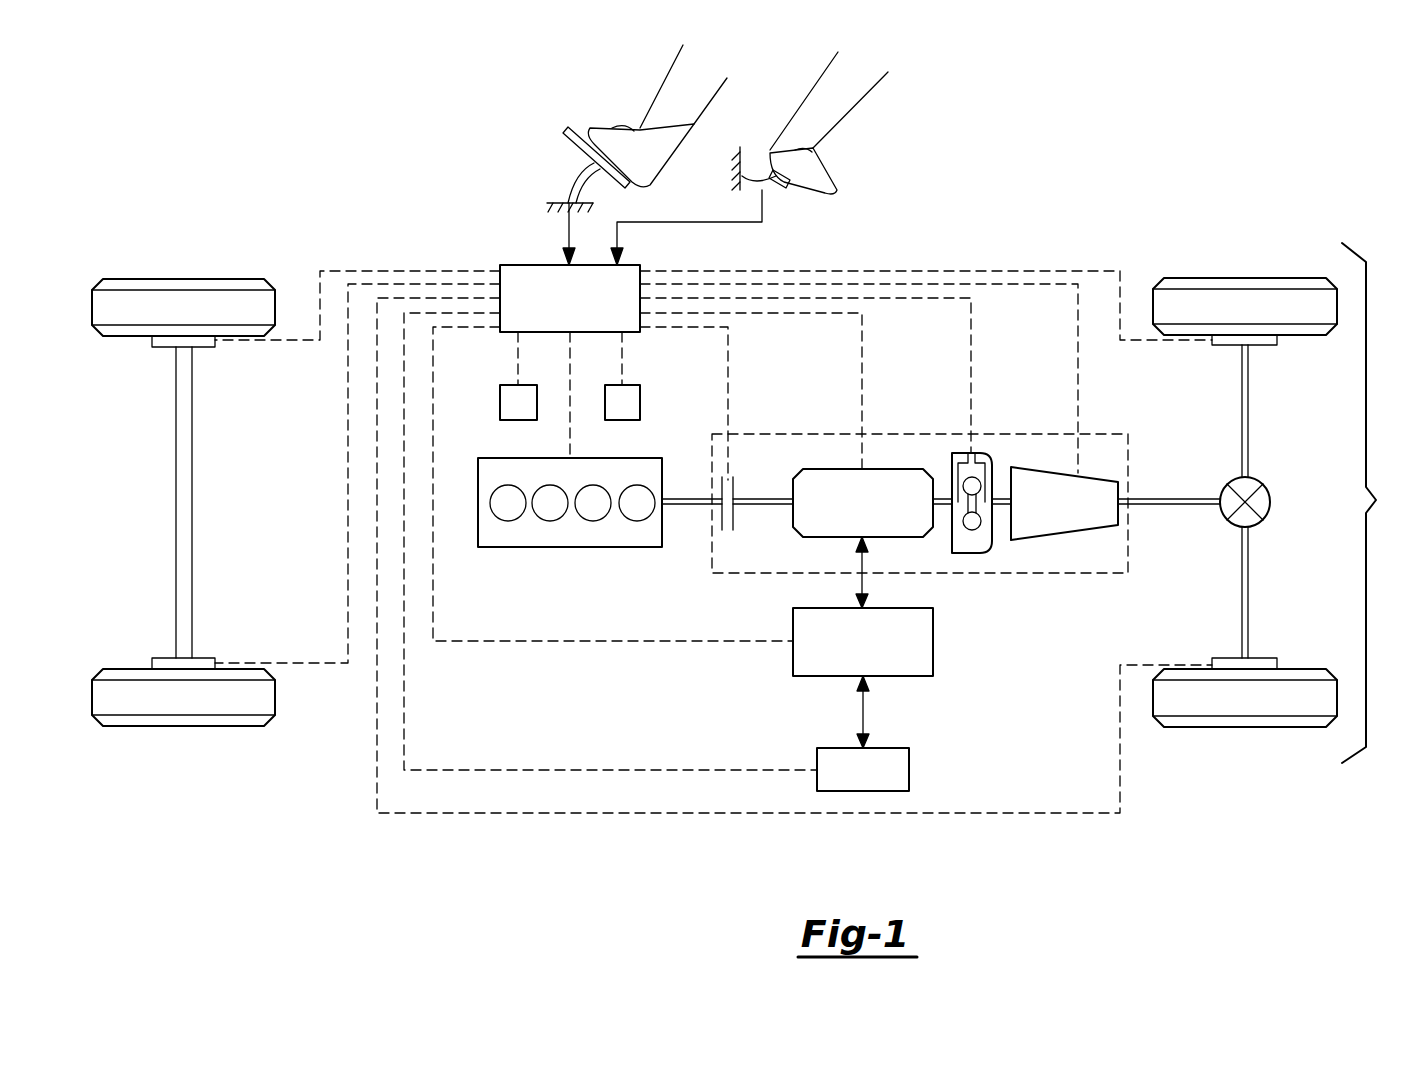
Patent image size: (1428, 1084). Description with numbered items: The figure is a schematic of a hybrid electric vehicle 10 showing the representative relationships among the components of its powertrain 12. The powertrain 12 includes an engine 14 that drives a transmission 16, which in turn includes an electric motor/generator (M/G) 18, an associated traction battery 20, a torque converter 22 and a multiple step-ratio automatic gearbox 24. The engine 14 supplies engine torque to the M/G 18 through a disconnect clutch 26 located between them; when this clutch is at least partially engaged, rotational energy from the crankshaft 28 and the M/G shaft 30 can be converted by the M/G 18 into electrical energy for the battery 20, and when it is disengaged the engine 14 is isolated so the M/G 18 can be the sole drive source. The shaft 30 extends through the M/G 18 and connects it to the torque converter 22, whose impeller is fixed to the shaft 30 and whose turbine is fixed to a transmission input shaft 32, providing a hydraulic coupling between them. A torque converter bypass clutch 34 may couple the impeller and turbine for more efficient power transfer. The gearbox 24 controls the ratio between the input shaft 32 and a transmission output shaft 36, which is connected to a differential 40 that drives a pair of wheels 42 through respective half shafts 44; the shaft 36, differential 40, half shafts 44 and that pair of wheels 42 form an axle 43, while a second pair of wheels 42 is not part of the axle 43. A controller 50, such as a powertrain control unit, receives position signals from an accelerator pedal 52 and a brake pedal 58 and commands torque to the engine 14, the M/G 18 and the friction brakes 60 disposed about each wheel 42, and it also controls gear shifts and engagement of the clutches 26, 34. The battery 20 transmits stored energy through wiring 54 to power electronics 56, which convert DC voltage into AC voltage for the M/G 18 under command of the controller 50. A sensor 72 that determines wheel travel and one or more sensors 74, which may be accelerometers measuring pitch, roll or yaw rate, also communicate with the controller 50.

The hybrid electric vehicle 10 is at (1138, 200).
The powertrain 12 is at (655, 690).
The engine 14 is at (570, 547).
The transmission 16 is at (903, 434).
The electric motor/generator (M/G) 18 is at (840, 469).
The traction battery 20 is at (909, 770).
The torque converter 22 is at (968, 553).
The gearbox 24 is at (1058, 540).
The disconnect clutch 26 is at (735, 520).
The crankshaft 28 is at (688, 499).
The M/G shaft 30 is at (765, 499).
The transmission input shaft 32 is at (997, 499).
The torque converter bypass clutch 34 is at (972, 453).
The transmission output shaft 36 is at (1183, 499).
The differential 40 is at (1270, 502).
The wheels 42 is at (187, 279).
The axle 43 is at (1379, 503).
The half shaft 44 is at (1249, 407).
The controller (powertrain control unit) 50 is at (513, 265).
The accelerator pedal 52 is at (570, 140).
The wiring 54 is at (864, 710).
The power electronics 56 is at (933, 643).
The brake pedal 58 is at (788, 184).
The friction brakes 60 is at (160, 347).
The sensor 72 is at (640, 405).
The sensors 74 is at (500, 405).